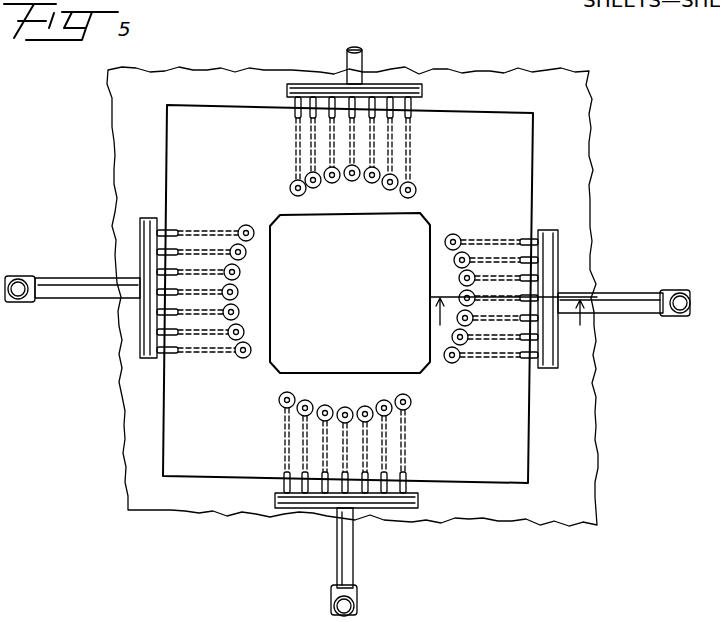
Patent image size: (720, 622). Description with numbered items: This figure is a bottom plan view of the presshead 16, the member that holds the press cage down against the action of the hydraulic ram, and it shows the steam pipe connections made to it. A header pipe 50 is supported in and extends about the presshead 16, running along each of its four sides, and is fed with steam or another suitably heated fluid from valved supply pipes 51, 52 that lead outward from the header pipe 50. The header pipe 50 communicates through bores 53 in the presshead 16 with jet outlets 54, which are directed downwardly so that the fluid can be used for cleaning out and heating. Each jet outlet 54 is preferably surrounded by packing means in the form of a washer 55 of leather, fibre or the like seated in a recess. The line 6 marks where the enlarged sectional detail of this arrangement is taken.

The presshead 16 is at (527, 176).
The header pipe 50 is at (422, 91).
The valved supply pipe 51 is at (360, 64).
The valved supply pipe 52 is at (85, 288).
The bore 53 is at (412, 148).
The jet outlet 54 is at (410, 190).
The washer 55 is at (414, 200).
The section line 6— 6 is at (513, 323).